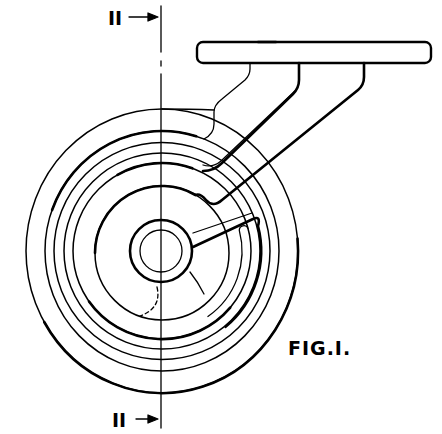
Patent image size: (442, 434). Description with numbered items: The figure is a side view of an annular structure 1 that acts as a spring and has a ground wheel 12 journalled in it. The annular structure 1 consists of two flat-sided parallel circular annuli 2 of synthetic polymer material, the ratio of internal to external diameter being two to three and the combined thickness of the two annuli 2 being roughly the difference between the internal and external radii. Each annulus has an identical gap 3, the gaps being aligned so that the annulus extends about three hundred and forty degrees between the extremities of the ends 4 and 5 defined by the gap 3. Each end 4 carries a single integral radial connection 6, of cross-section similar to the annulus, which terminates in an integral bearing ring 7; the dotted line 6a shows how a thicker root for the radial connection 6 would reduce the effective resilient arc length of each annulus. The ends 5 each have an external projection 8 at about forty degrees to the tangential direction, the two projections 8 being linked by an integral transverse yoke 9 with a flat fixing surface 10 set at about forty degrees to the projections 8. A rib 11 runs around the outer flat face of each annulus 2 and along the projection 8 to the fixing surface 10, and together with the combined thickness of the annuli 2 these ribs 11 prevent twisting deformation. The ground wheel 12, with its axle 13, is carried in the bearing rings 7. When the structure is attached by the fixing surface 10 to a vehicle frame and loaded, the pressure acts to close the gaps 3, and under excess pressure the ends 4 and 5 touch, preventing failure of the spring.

The annular structure 1 is at (64, 309).
The circular annuli 2 is at (118, 345).
The gap 3 is at (250, 203).
The end 4 is at (257, 282).
The end 5 is at (173, 148).
The radial connection 6 is at (220, 250).
The dotted line 6a is at (173, 299).
The bearing ring 7 is at (140, 229).
The external projection 8 is at (300, 133).
The transverse yoke 9 is at (340, 52).
The flat fixing surface 10 is at (266, 42).
The rib 11 is at (100, 180).
The ground wheel 12 is at (248, 352).
The axle 13 is at (150, 258).